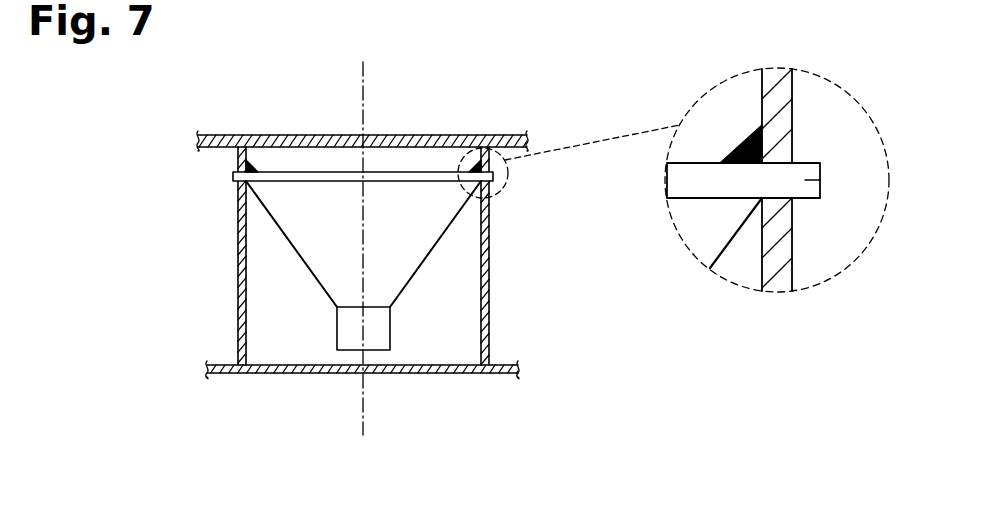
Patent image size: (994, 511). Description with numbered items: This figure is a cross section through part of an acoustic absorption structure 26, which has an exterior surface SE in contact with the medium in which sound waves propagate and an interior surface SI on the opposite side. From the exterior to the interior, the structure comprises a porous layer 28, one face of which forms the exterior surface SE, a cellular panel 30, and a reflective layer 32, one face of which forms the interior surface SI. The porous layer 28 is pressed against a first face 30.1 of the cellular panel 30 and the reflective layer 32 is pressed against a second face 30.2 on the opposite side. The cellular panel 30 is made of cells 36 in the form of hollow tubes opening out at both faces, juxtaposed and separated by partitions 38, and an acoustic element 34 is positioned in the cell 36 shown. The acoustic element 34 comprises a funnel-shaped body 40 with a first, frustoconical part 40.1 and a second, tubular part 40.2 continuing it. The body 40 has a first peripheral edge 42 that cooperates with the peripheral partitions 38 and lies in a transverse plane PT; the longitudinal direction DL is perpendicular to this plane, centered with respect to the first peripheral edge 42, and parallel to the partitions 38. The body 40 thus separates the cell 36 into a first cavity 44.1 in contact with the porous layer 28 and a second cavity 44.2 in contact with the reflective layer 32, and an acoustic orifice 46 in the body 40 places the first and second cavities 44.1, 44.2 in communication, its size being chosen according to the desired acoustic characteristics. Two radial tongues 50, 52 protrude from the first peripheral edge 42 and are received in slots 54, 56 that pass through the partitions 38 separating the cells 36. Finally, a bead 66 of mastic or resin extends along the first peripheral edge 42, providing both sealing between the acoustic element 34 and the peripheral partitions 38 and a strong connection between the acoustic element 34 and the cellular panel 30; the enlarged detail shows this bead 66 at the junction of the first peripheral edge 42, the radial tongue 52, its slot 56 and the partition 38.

The acoustic absorption structure 26 is at (126, 308).
The porous layer 28 is at (192, 140).
The cellular panel 30 is at (185, 150).
The first face 30.1 is at (305, 147).
The second face 30.2 is at (284, 362).
The reflective layer 32 is at (198, 370).
The acoustic element 34 is at (303, 242).
The cell 36 is at (314, 368).
The partition 38 is at (238, 322).
The body 40 is at (415, 260).
The first, frustoconical part 40.1 is at (420, 234).
The second, tubular part 40.2 is at (390, 320).
The first peripheral edge 42 is at (414, 172).
The first cavity 44.1 is at (345, 162).
The second cavity 44.2 is at (445, 352).
The acoustic orifice 46 is at (385, 375).
The radial tongue 50 is at (233, 176).
The radial tongue 52 is at (496, 178).
The slot 54 is at (238, 206).
The slot 56 is at (487, 191).
The bead 66 is at (246, 163).
The transverse plane PT is at (382, 163).
The exterior surface SE is at (514, 126).
The interior surface SI is at (488, 376).
The longitudinal direction DL is at (363, 408).